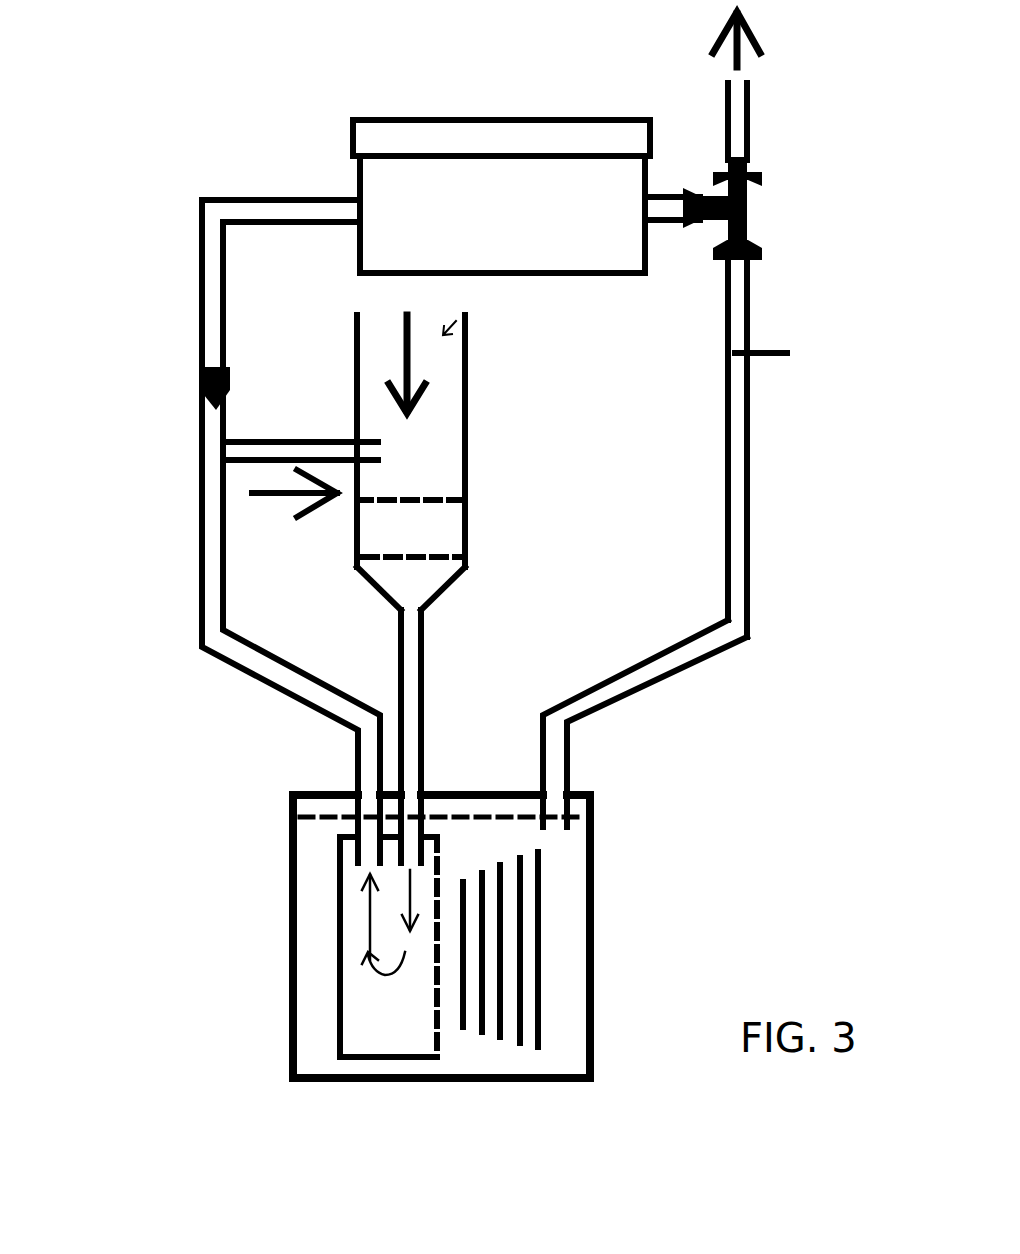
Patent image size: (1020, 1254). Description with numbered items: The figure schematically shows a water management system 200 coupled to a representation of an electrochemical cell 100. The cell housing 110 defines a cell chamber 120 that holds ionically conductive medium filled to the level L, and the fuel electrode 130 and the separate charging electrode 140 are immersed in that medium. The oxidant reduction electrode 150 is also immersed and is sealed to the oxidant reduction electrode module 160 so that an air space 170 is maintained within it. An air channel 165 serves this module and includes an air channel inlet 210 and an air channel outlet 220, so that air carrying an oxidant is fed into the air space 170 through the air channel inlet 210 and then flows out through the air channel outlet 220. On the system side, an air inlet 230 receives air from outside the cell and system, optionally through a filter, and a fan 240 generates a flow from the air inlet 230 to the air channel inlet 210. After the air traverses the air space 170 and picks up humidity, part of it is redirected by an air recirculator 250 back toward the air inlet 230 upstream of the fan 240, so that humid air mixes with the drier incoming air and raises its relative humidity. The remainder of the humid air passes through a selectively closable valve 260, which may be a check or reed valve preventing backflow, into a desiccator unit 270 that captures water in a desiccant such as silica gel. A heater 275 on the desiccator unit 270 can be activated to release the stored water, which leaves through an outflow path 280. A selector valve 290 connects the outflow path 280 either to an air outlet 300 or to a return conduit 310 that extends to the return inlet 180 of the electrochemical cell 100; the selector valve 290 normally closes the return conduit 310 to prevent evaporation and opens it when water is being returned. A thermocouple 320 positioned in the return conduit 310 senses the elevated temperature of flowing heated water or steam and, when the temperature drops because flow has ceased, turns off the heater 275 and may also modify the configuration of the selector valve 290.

The electrochemical cell 100 is at (233, 812).
The cell housing 110 is at (598, 956).
The cell chamber 120 is at (570, 1056).
The fuel electrode 130 is at (497, 1012).
The charging electrode 140 is at (455, 1015).
The oxidant reduction electrode 150 is at (430, 960).
The oxidant reduction electrode module 160 is at (335, 940).
The air channel 165 is at (377, 752).
The air space 170 is at (368, 1030).
The return inlet 180 is at (548, 752).
The water management system 200 is at (147, 108).
The air channel inlet 210 is at (410, 850).
The air channel outlet 220 is at (360, 845).
The air inlet 230 is at (463, 316).
The fan 240 is at (458, 552).
The air recirculator 250 is at (323, 453).
The valve 260 is at (200, 368).
The desiccator unit 270 is at (587, 248).
The heater 275 is at (568, 142).
The outflow path 280 is at (665, 207).
The selector valve 290 is at (750, 200).
The air outlet 300 is at (735, 118).
The return conduit 310 is at (750, 298).
The thermocouple 320 is at (767, 358).
The level L is at (484, 800).